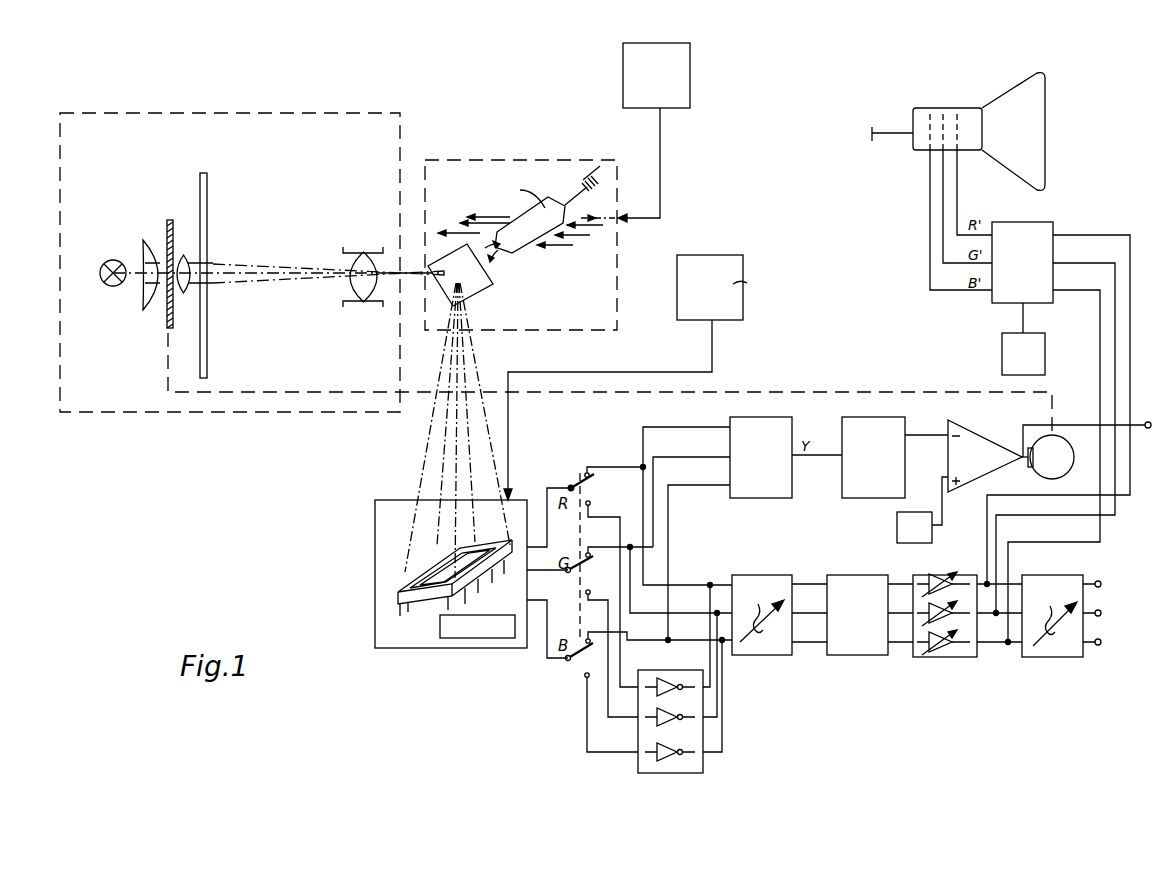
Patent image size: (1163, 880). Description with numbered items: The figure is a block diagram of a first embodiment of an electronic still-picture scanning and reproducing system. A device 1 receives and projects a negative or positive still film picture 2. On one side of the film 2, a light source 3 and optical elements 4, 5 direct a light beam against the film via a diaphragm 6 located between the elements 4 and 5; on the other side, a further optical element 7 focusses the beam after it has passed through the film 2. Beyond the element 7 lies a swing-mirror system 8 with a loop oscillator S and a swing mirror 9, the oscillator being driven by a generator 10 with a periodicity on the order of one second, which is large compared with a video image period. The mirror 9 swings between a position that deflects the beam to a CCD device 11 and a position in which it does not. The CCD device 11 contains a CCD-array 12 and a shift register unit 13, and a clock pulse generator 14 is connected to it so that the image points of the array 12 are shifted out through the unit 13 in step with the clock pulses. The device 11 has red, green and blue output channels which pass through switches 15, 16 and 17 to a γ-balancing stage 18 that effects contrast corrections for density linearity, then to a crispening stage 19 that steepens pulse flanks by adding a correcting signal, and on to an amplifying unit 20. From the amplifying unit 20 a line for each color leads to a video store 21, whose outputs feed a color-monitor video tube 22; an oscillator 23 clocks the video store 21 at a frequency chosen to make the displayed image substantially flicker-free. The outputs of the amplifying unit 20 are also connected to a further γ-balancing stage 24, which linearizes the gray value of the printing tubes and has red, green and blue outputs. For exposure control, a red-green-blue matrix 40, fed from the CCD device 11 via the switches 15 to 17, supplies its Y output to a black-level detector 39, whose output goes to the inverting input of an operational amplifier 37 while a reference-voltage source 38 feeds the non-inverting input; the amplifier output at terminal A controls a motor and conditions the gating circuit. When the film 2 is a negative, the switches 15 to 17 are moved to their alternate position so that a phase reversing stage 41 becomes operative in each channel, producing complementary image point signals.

The device for receiving and projecting a still film picture 1 is at (238, 118).
The still film picture 2 is at (208, 189).
The light source 3 is at (110, 262).
The optical element 4 is at (143, 255).
The optical element 5 is at (184, 253).
The filter plate 6 is at (169, 220).
The further optical element 7 is at (352, 263).
The deflection unit 8 is at (460, 172).
The swing mirror 9 is at (478, 290).
The generator 10 is at (683, 73).
The CCD device 11 is at (375, 517).
The CCD-array 12 is at (420, 579).
The shift register unit 13 is at (480, 623).
The clock pulse generator 14 is at (743, 262).
The switch 15 is at (585, 471).
The switch 16 is at (584, 537).
The switch 17 is at (578, 658).
The γ-balancing stage 18 is at (747, 577).
The crispening stage 19 is at (857, 577).
The amplifying unit 20 is at (952, 578).
The video store 21 is at (1053, 226).
The color-monitor video tube 22 is at (1045, 142).
The oscillator 23 is at (1040, 335).
The further γ-balancing stage 24 is at (1040, 577).
The operational amplifier 37 is at (984, 441).
The reference-voltage source 38 is at (894, 516).
The black-level detector 39 is at (866, 417).
The red-green-blue (RGB) matrix 40 is at (790, 425).
The inverter stage 41 is at (703, 703).